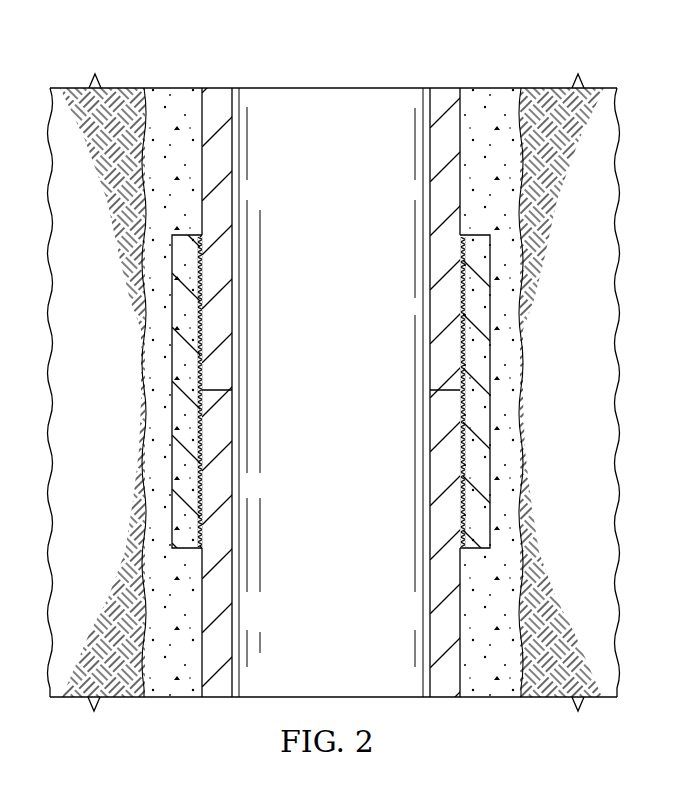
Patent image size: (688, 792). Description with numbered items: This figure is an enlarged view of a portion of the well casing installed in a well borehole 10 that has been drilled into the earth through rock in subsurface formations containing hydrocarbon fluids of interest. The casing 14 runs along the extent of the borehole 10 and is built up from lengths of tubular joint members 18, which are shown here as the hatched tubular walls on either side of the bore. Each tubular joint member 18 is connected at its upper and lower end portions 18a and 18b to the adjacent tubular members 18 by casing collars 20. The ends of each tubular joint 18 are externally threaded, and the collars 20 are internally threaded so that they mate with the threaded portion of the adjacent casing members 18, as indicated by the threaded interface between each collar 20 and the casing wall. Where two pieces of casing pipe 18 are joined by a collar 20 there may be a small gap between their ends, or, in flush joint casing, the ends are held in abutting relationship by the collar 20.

The well borehole 10 is at (347, 403).
The casing 14 is at (412, 67).
The tubular joint member 18 is at (420, 303).
The upper end portion 18a is at (232, 603).
The lower end portion 18b is at (232, 195).
The casing collar 20 is at (482, 383).